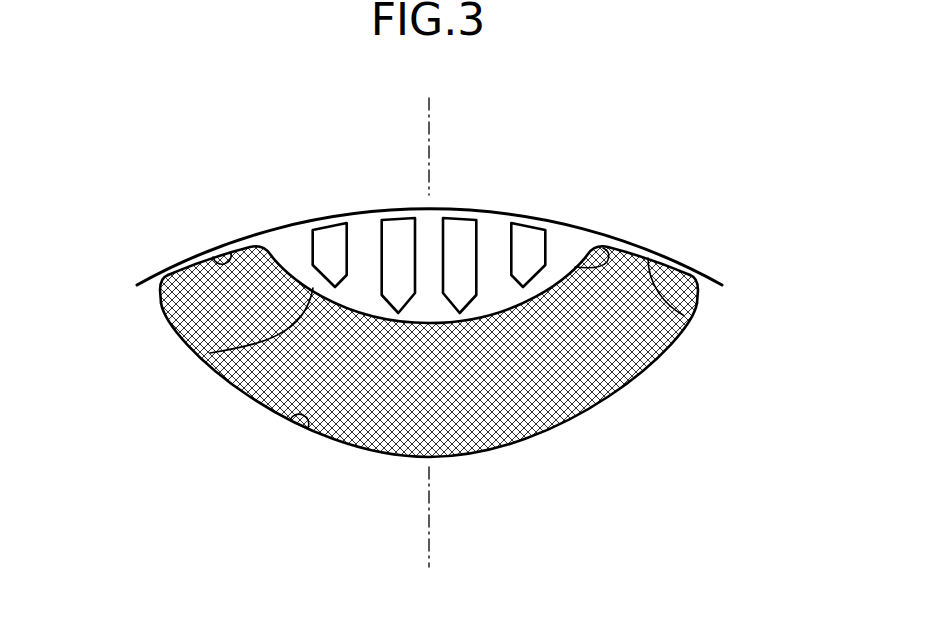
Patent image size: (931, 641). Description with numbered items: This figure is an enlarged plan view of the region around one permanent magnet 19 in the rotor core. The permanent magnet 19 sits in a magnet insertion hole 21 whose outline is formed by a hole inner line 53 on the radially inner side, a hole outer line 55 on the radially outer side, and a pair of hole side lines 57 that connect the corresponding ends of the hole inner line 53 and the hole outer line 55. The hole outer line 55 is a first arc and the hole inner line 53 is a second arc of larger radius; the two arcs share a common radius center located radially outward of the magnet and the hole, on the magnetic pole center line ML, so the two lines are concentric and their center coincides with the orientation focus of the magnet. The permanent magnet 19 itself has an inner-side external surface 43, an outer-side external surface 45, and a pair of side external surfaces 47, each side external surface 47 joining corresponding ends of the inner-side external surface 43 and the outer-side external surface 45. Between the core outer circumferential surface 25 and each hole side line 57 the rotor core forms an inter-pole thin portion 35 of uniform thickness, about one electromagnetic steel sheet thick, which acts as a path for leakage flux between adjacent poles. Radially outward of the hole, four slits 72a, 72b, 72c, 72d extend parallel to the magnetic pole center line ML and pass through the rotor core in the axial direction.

The permanent magnet 19 is at (640, 250).
The magnet insertion hole 21 is at (614, 277).
The core outer circumferential surface 25 is at (283, 225).
The inter-pole thin portion 35 is at (172, 277).
The inner-side external surface 43 is at (578, 417).
The outer-side external surface 45 is at (283, 257).
The side external surfaces 47 is at (167, 278).
The hole inner line 53 is at (290, 420).
The hole outer line 55 is at (210, 353).
The hole side lines 57 is at (210, 262).
The slit 72a is at (398, 232).
The slit 72b is at (458, 232).
The slit 72c is at (333, 238).
The slit 72d is at (528, 236).
The magnetic pole center line ML is at (430, 118).